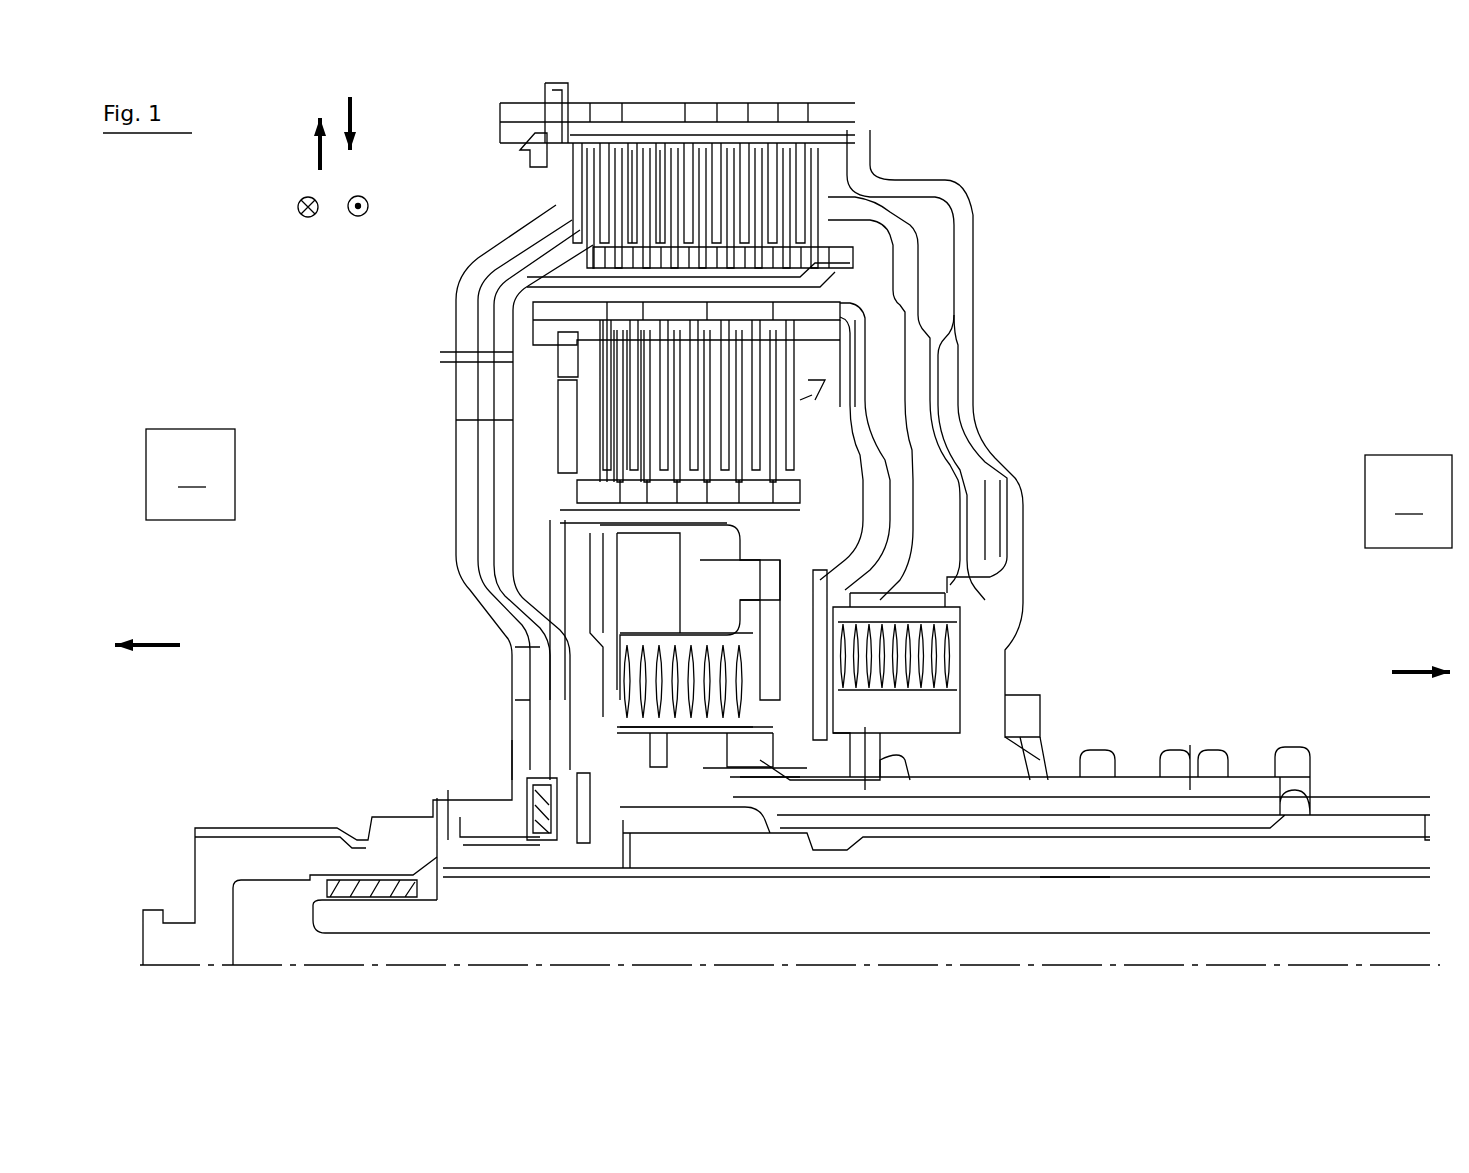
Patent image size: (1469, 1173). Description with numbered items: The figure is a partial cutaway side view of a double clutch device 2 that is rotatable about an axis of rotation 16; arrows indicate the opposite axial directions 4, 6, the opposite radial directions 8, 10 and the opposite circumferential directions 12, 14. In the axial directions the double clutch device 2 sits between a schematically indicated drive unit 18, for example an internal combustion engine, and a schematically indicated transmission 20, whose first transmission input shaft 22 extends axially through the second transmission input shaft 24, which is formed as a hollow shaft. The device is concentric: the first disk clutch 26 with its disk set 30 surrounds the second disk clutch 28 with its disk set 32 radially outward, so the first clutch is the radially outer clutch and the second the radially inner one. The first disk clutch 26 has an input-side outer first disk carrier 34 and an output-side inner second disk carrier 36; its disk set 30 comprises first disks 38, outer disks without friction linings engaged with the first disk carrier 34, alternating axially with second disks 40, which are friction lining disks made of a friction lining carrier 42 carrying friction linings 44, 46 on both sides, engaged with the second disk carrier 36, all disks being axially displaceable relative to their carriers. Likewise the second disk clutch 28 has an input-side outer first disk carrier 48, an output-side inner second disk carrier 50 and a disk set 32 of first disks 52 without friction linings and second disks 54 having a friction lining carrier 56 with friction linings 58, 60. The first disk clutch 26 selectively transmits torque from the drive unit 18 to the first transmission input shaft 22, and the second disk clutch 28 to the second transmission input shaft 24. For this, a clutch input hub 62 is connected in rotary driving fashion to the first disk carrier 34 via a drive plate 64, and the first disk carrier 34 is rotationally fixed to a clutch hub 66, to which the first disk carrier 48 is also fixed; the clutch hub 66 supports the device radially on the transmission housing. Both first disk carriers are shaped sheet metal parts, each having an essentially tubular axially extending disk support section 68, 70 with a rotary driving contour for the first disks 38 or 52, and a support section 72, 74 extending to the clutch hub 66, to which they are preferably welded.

The double clutch device 2 is at (1155, 182).
The axial direction 4 is at (150, 640).
The axial direction 6 is at (1400, 668).
The radial direction 8 is at (318, 145).
The radial direction 10 is at (356, 122).
The circumferential direction 12 is at (370, 206).
The circumferential direction 14 is at (298, 212).
The axis of rotation 16 is at (270, 965).
The drive unit 18 is at (190, 474).
The transmission 20 is at (1408, 501).
The first transmission input shaft 22 is at (985, 912).
The second transmission input shaft 24 is at (960, 855).
The first disk clutch 26 is at (812, 183).
The second disk clutch 28 is at (797, 407).
The disk set 30 is at (787, 218).
The disk set 32 is at (768, 388).
The first disk carrier 34 is at (874, 162).
The second disk carrier 36 is at (488, 342).
The first disks 38 is at (720, 200).
The second disks 40 is at (583, 192).
The friction lining carrier 42 is at (637, 222).
The friction lining 44 is at (632, 210).
The friction lining 46 is at (642, 233).
The first disk carrier 48 is at (870, 343).
The second disk carrier 50 is at (548, 572).
The first disks 52 is at (623, 380).
The second disks 54 is at (627, 405).
The friction lining carrier 56 is at (636, 437).
The friction lining 58 is at (630, 422).
The friction lining 60 is at (645, 455).
The clutch input hub 62 is at (297, 848).
The drive plate 64 is at (515, 647).
The clutch hub 66 is at (948, 757).
The disk support section 68 is at (670, 115).
The disk support section 70 is at (722, 310).
The support section 72 is at (985, 460).
The support section 74 is at (887, 465).